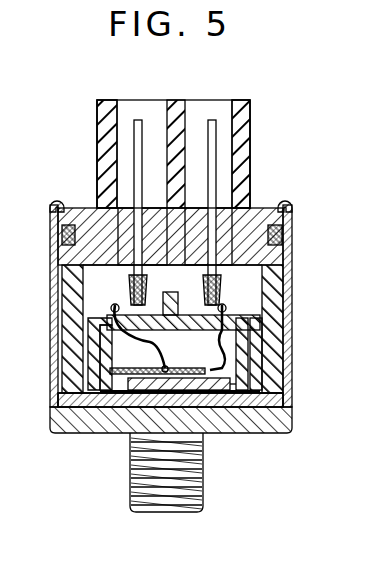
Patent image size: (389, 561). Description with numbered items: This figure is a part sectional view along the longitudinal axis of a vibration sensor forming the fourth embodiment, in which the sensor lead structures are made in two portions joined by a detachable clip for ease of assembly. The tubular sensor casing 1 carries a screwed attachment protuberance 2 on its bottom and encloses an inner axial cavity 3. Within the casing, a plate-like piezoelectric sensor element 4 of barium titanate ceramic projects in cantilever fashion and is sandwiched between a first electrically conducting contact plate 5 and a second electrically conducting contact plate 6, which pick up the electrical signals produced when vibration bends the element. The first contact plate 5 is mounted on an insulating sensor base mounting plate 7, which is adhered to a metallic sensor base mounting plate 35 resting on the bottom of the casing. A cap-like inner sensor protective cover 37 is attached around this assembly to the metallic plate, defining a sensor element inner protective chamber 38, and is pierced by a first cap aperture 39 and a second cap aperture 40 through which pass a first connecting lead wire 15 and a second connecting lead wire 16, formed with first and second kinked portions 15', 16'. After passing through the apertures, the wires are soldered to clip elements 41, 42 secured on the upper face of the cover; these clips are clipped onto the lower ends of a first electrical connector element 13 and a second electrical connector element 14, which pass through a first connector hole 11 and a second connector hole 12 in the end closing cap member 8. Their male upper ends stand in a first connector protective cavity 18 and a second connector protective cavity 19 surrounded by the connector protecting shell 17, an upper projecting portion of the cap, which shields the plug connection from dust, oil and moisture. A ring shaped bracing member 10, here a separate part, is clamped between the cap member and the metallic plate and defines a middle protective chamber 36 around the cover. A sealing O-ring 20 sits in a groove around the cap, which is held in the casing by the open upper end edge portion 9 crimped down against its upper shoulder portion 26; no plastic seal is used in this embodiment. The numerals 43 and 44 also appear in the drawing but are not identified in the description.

The tubular sensor casing 1 is at (289, 252).
The screwed attachment protuberance 2 is at (204, 492).
The inner axial cavity 3 is at (70, 320).
The sensor element 4 is at (120, 400).
The first electrically conducting contact plate 5 is at (205, 392).
The second electrically conducting contact plate 6 is at (208, 368).
The insulating sensor base mounting plate 7 is at (238, 392).
The end closing cap member 8 is at (276, 256).
The open upper end edge portion 9 is at (290, 198).
The ring shaped bracing member 10 is at (278, 298).
The first connector hole 11 is at (218, 236).
The second connector hole 12 is at (134, 236).
The first electrical connector element 13 is at (212, 120).
The second electrical connector element 14 is at (138, 120).
The first connecting lead wire 15 is at (215, 376).
The first kinked portion 15' is at (196, 392).
The second connecting lead wire 16 is at (134, 336).
The second kinked portion 16' is at (170, 353).
The connector protecting shell 17 is at (246, 112).
The first connector protective cavity 18 is at (240, 134).
The second connector protective cavity 19 is at (112, 134).
The sealing O-ring 20 is at (280, 236).
The upper shoulder portion 26 is at (268, 200).
The metallic sensor base mounting plate 35 is at (272, 396).
The middle protective chamber 36 is at (82, 276).
The inner sensor protective cover 37 is at (60, 396).
The sensor element inner protective chamber 38 is at (58, 420).
The first cap aperture 39 is at (256, 340).
The second cap aperture 40 is at (92, 356).
The clip element 41 is at (221, 292).
The clip element 42 is at (129, 292).
The support disc 43 is at (262, 322).
The left bracket 44 is at (88, 340).